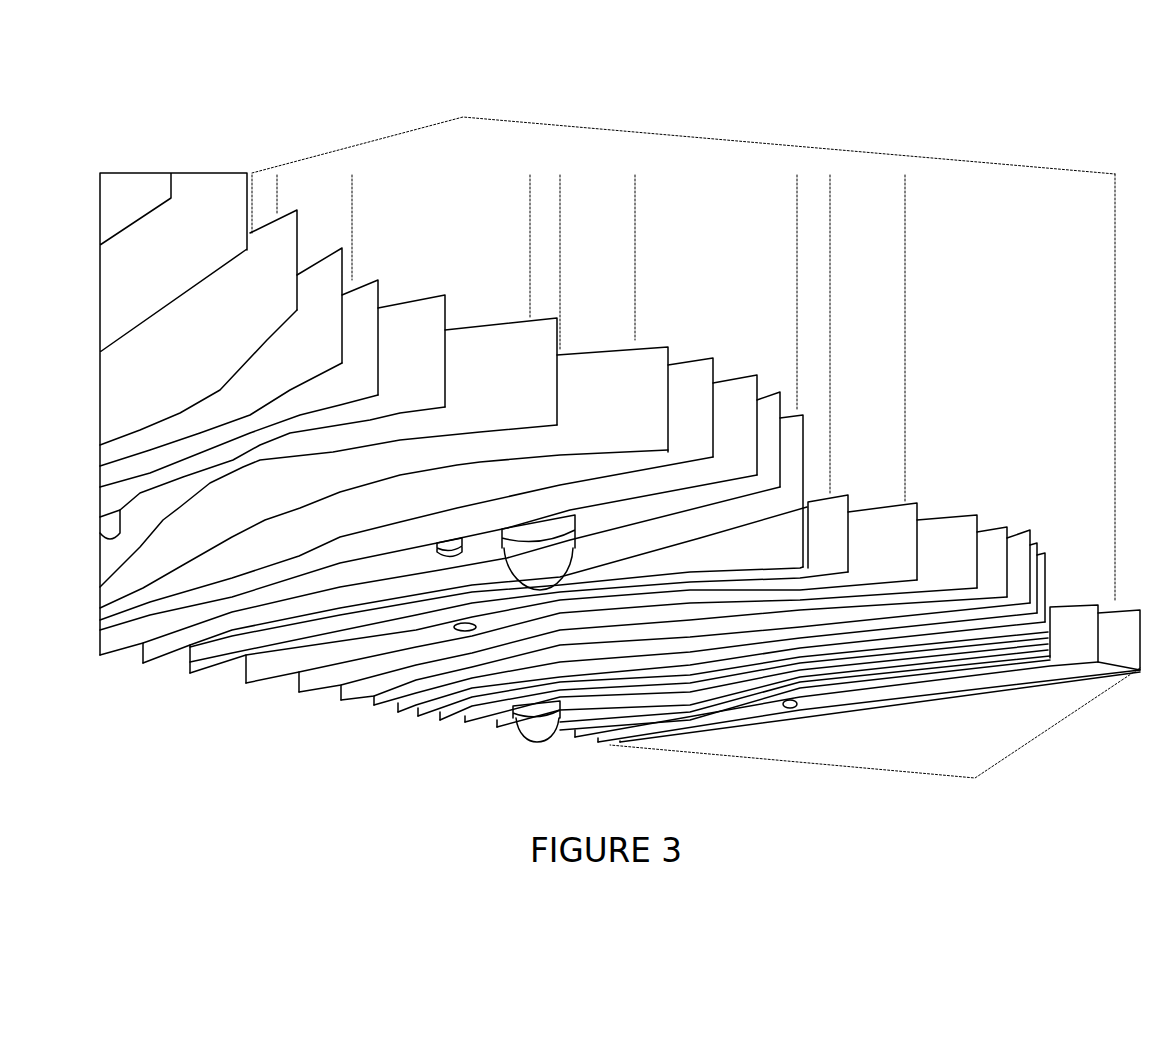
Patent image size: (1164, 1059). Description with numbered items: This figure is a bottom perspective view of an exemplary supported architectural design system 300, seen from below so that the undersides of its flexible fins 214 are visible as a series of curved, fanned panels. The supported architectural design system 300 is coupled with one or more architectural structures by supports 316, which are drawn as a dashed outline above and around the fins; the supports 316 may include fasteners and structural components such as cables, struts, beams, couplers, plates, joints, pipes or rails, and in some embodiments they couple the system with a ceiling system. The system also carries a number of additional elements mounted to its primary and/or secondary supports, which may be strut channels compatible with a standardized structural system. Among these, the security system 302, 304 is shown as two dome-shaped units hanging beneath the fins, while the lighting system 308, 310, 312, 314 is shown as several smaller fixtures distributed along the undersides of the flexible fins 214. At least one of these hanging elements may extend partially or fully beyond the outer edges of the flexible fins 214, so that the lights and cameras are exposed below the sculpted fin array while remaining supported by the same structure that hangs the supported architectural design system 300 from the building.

The supported architectural design system 300 is at (1045, 147).
The flexible fins 214 is at (975, 778).
The supports 316 is at (463, 117).
The security system 302 is at (537, 743).
The security system 304 is at (562, 585).
The lighting system 308 is at (112, 545).
The lighting system 310 is at (440, 558).
The lighting system 312 is at (460, 632).
The lighting system 314 is at (792, 708).